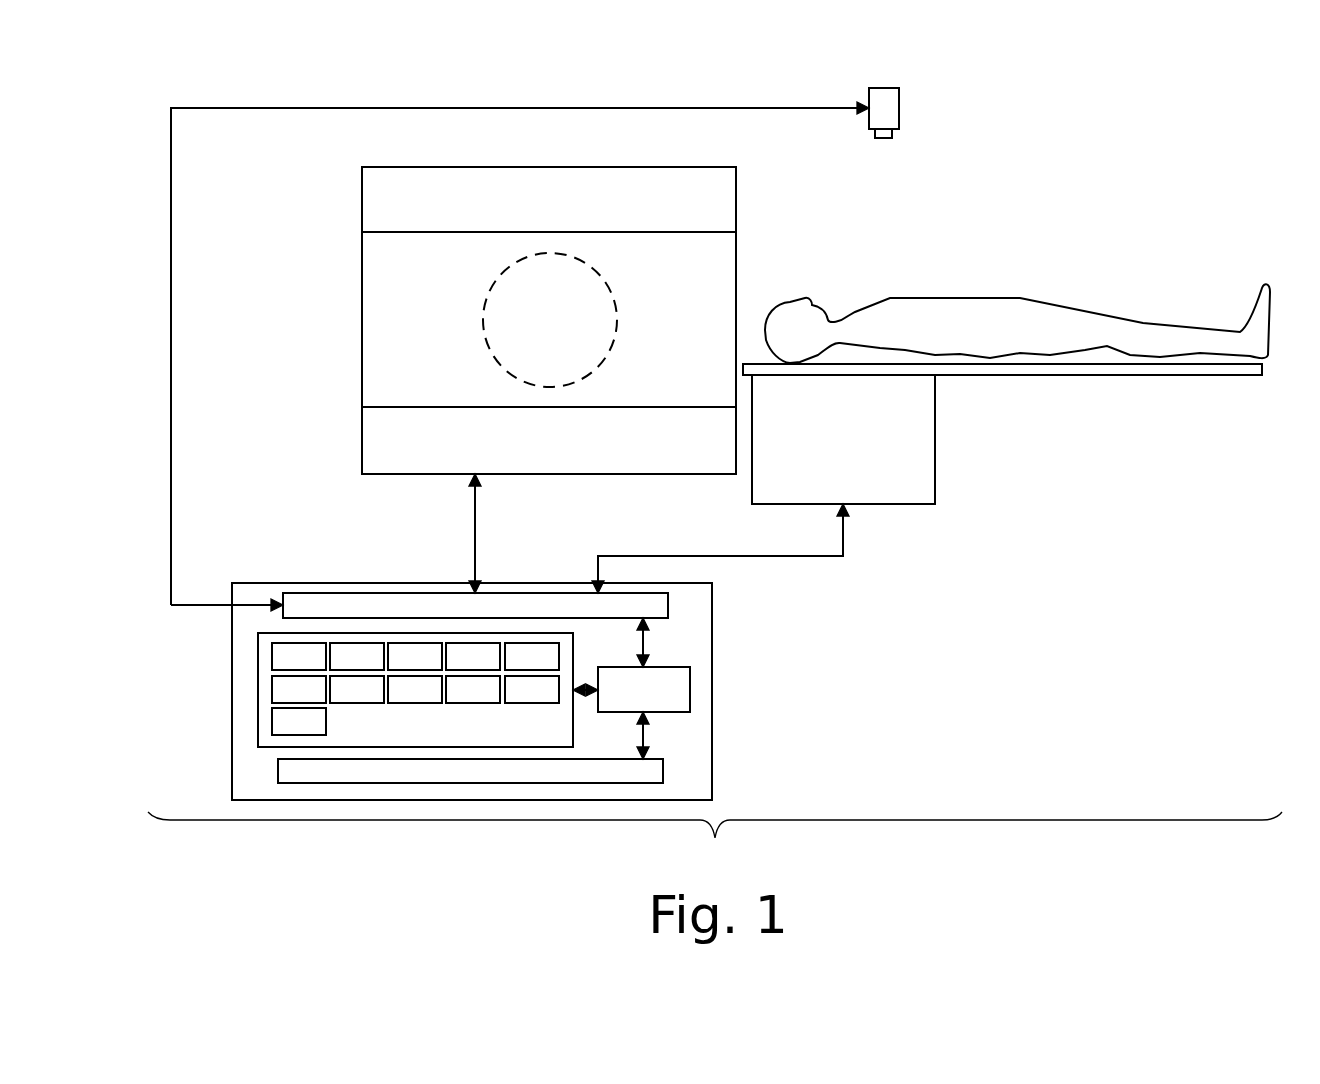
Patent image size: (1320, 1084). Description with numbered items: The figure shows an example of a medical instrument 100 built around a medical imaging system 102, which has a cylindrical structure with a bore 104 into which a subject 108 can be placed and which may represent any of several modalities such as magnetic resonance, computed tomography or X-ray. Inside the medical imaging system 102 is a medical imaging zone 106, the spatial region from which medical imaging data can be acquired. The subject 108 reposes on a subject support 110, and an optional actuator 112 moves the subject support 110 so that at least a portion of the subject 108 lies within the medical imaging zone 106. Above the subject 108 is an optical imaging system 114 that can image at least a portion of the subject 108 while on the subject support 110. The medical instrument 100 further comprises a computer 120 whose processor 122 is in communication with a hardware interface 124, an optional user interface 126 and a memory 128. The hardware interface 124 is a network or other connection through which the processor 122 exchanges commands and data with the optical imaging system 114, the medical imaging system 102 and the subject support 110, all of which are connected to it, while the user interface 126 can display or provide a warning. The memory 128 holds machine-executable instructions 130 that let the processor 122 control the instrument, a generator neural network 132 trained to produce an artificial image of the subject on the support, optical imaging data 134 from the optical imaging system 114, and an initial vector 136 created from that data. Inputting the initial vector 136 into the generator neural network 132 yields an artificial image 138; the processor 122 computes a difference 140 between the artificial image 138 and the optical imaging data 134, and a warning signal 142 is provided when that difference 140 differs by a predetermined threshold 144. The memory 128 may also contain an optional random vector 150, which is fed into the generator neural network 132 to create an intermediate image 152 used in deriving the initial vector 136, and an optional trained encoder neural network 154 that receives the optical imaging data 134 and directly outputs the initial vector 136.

The medical instrument 100 is at (715, 844).
The medical imaging system 102 is at (736, 175).
The bore 104 is at (700, 268).
The medical imaging zone 106 is at (573, 258).
The subject 108 is at (1020, 298).
The subject support 110 is at (1073, 375).
The actuator 112 is at (935, 490).
The optical imaging system 114 is at (899, 105).
The computer 120 is at (712, 620).
The processor 122 is at (631, 688).
The hardware interface 124 is at (475, 607).
The user interface 126 is at (470, 772).
The memory 128 is at (258, 670).
The machine-executable instructions 130 is at (299, 657).
The generator neural network 132 is at (357, 657).
The optical imaging data 134 is at (415, 657).
The initial vector 136 is at (473, 657).
The artificial image 138 is at (532, 657).
The difference 140 is at (299, 690).
The warning signal 142 is at (357, 690).
The predetermined threshold 144 is at (415, 690).
The random vector 150 is at (473, 690).
The intermediate image 152 is at (532, 690).
The trained encoder neural network 154 is at (299, 722).